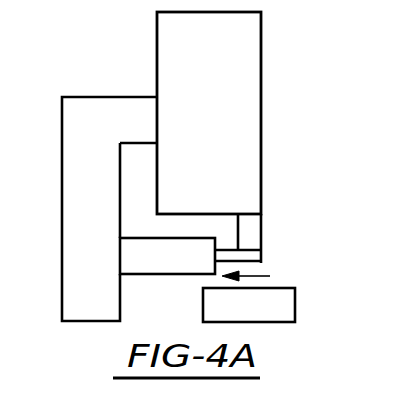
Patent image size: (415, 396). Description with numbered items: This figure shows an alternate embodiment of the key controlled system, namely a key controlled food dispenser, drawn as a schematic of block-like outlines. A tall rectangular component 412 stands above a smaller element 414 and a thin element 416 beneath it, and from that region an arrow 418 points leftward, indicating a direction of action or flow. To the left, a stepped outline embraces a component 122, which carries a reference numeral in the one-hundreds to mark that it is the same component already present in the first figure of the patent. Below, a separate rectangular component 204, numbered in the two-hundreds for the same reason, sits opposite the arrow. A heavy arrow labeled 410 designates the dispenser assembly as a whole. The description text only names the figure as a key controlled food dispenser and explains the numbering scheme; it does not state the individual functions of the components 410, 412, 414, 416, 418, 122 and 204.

The print head assembly 410 is at (347, 236).
The heater block 412 is at (261, 175).
The heating element 414 is at (261, 232).
The nozzle plate 416 is at (261, 258).
The ink drop direction 418 is at (262, 276).
The ink supply body 122 is at (178, 274).
The recording medium 204 is at (295, 291).